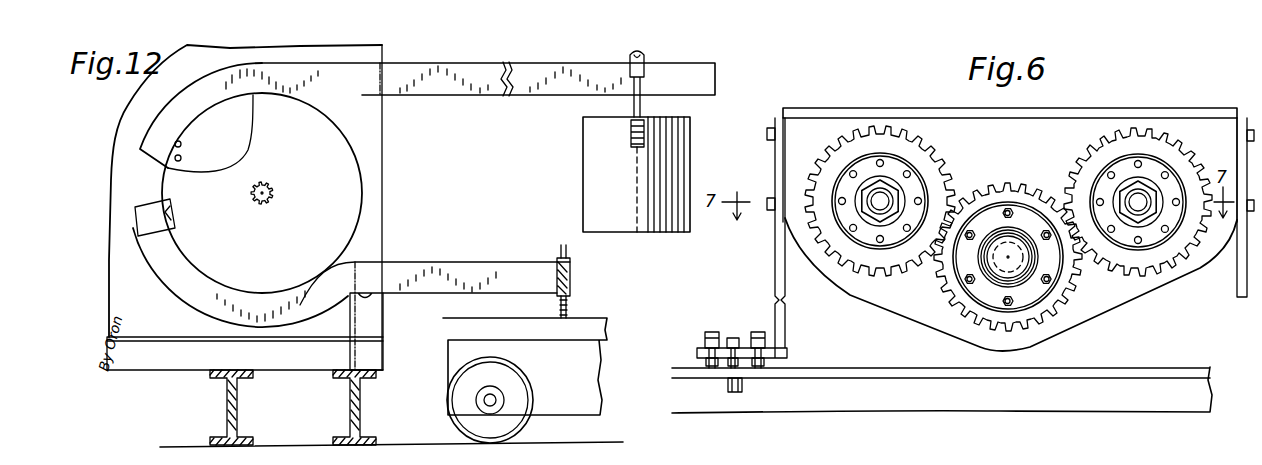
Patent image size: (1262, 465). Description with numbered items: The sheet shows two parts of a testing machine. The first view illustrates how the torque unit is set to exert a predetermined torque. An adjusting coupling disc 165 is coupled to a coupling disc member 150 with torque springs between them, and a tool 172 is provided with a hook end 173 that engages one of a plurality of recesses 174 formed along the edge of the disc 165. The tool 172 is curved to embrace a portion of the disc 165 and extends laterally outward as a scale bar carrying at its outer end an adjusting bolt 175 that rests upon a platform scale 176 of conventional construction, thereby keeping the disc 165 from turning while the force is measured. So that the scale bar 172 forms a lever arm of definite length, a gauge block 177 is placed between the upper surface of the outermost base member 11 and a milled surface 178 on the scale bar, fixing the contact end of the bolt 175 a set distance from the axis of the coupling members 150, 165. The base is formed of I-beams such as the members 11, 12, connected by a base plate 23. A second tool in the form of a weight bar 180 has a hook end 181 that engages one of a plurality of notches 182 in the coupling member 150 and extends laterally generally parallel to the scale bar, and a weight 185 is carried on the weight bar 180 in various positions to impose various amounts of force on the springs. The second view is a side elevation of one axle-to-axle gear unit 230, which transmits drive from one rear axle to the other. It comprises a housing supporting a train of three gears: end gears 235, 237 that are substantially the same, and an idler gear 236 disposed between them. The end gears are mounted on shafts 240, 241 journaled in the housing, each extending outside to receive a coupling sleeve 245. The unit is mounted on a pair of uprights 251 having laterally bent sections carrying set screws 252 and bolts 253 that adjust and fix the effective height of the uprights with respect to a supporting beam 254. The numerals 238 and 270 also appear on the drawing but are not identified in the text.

In FIG. 12, the I-beam 11 is at (352, 402).
In FIG. 12, the I-beam 12 is at (228, 405).
In FIG. 12, the base plate 23 is at (245, 353).
In FIG. 12, the coupling disc member 150 is at (233, 108).
In FIG. 12, the adjusting coupling disc 165 is at (345, 174).
In FIG. 12, the tool 172 is at (262, 293).
In FIG. 12, the hook end 173 is at (155, 207).
In FIG. 12, the recess 174 is at (173, 217).
In FIG. 12, the adjusting bolt 175 is at (567, 250).
In FIG. 12, the platform scale 176 is at (587, 318).
In FIG. 12, the gauge block 177 is at (375, 315).
In FIG. 12, the milled surface 178 is at (377, 293).
In FIG. 12, the weight bar 180 is at (525, 70).
In FIG. 12, the hook end 181 is at (182, 145).
In FIG. 12, the notch 182 is at (181, 158).
In FIG. 12, the weight 185 is at (593, 161).
In FIG. 6, the axle-to-axle gear unit 230 is at (1123, 92).
In FIG. 6, the end gear 235 is at (1153, 277).
In FIG. 6, the idler gear 236 is at (938, 268).
In FIG. 6, the end gear 237 is at (865, 128).
In FIG. 6, the housing bottom wall 238 is at (1097, 313).
In FIG. 6, the shaft 240 is at (1137, 203).
In FIG. 6, the shaft 241 is at (877, 200).
In FIG. 6, the coupling sleeve 245 is at (893, 170).
In FIG. 6, the upright 251 is at (777, 312).
In FIG. 6, the set screw 252 is at (758, 332).
In FIG. 6, the bolt 253 is at (743, 385).
In FIG. 6, the supporting beam 254 is at (892, 368).
In FIG. 6, the gear rim 270 is at (852, 240).